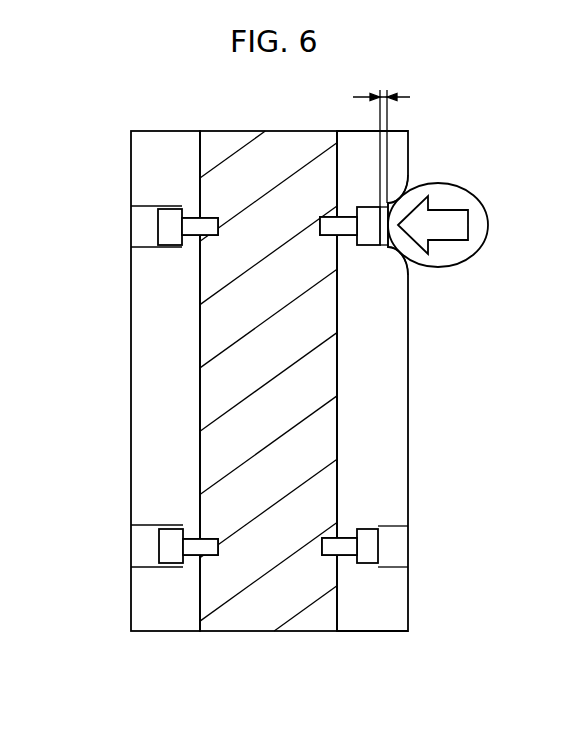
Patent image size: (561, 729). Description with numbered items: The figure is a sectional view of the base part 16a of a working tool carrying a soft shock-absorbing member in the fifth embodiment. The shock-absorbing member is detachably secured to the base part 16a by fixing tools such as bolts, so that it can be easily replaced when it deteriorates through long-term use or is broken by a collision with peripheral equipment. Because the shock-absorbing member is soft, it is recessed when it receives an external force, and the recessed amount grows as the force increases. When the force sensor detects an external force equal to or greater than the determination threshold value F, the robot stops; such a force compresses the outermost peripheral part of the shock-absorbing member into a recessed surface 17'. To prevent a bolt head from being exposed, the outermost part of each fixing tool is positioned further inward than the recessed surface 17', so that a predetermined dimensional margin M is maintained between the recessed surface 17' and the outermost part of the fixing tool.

The base part 16a is at (248, 178).
The recessed surface 17' is at (436, 209).
The dimensional margin M is at (381, 136).
The determination threshold value F is at (438, 225).